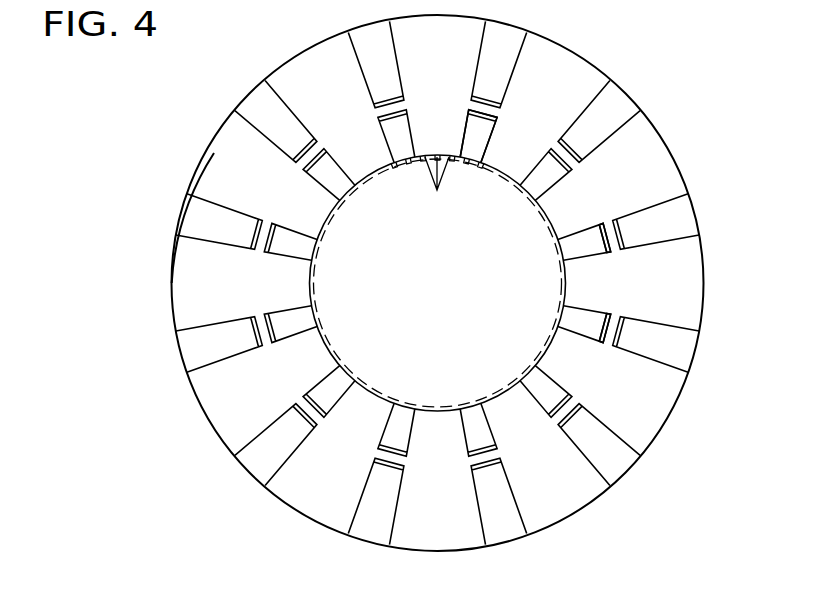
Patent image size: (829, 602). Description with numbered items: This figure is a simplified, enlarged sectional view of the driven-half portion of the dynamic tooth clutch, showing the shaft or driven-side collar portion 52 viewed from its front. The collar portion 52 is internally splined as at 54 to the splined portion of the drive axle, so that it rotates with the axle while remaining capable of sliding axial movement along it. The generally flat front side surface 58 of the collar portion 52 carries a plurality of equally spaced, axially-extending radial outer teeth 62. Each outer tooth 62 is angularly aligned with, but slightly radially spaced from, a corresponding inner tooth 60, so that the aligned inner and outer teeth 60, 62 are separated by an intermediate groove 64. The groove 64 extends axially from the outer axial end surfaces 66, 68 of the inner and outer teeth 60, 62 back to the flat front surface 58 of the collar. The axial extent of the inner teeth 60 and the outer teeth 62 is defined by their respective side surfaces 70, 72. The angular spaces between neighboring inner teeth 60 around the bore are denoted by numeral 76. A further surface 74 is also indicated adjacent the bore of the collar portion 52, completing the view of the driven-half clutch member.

The driven-side collar portion 52 is at (257, 486).
The internal spline 54 is at (437, 186).
The flat front side surface 58 is at (642, 160).
The inner teeth 60 is at (577, 240).
The radial outer teeth 62 is at (647, 336).
The intermediate groove 64 is at (602, 218).
The outer axial end surface of inner tooth 66 is at (470, 138).
The outer axial end surface of outer tooth 68 is at (497, 68).
The side surfaces of inner teeth 70 is at (460, 130).
The side surfaces of outer teeth 72 is at (397, 62).
The rotor surface 74 is at (318, 214).
The angular spaces between inner teeth 76 is at (216, 160).